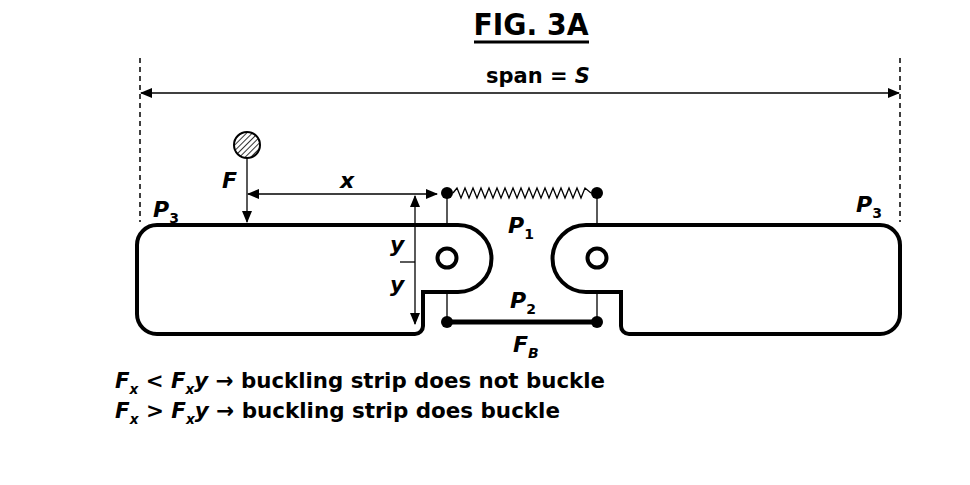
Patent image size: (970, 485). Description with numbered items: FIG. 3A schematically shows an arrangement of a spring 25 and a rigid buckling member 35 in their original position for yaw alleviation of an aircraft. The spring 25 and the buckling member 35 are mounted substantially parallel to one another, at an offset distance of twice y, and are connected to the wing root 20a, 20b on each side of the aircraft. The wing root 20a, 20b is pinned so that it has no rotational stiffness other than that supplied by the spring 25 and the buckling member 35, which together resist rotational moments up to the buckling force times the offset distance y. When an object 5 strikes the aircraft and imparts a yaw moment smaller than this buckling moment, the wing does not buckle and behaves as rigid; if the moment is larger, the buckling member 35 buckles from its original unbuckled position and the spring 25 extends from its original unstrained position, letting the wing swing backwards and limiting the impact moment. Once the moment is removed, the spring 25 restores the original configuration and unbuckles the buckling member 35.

The object 5 is at (234, 143).
The wing root 20a is at (137, 304).
The wing root 20b is at (900, 304).
The spring 25 is at (574, 184).
The buckling member 35 is at (574, 330).